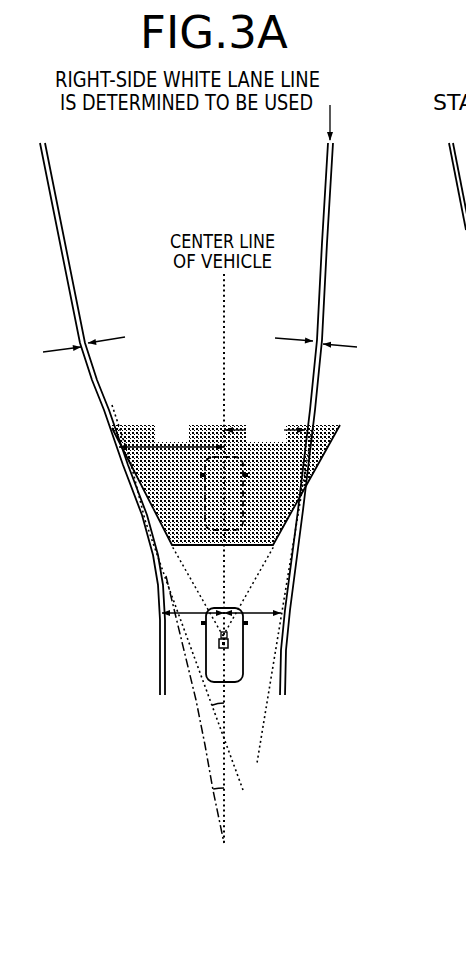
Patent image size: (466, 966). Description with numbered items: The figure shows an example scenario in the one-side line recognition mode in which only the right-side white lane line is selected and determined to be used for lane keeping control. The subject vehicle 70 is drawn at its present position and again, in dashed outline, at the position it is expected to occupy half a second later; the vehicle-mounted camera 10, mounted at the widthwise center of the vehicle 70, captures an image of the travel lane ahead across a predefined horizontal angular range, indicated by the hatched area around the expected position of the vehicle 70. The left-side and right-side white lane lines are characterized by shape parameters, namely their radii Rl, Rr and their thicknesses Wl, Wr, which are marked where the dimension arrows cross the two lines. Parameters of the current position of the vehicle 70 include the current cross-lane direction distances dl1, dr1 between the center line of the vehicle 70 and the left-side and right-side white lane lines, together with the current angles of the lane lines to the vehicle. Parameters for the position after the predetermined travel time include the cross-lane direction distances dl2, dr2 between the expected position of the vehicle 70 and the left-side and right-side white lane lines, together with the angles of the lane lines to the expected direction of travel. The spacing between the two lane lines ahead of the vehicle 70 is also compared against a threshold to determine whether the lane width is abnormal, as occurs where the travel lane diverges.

The vehicle-mounted camera 10 is at (225, 648).
The subject vehicle 70 is at (243, 518).
The radius of the left-side white lane line Rl is at (102, 430).
The radius of the right-side white lane line Rr is at (373, 425).
The thickness of the left-side white lane line Wl is at (81, 335).
The thickness of the right-side white lane line Wr is at (316, 329).
The current cross-lane direction distance to the left-side white lane line dl1 is at (193, 599).
The current cross-lane direction distance to the right-side white lane line dr1 is at (252, 601).
The cross-lane direction distance to the left-side white lane line after predetermin dl2 is at (171, 435).
The cross-lane direction distance to the right-side white lane line after predetermi dr2 is at (265, 433).